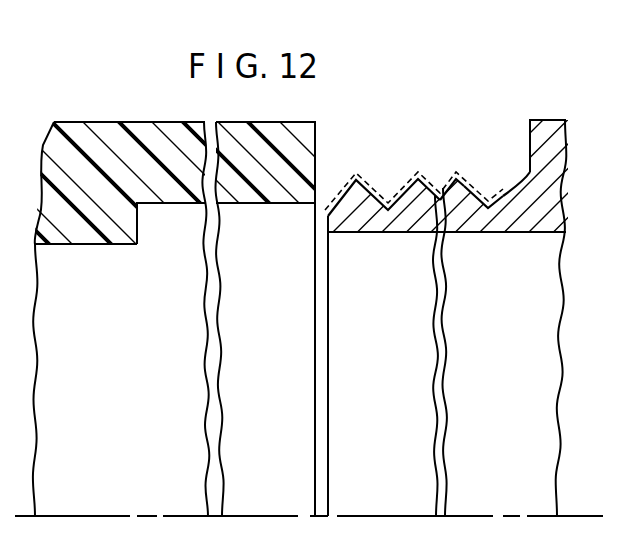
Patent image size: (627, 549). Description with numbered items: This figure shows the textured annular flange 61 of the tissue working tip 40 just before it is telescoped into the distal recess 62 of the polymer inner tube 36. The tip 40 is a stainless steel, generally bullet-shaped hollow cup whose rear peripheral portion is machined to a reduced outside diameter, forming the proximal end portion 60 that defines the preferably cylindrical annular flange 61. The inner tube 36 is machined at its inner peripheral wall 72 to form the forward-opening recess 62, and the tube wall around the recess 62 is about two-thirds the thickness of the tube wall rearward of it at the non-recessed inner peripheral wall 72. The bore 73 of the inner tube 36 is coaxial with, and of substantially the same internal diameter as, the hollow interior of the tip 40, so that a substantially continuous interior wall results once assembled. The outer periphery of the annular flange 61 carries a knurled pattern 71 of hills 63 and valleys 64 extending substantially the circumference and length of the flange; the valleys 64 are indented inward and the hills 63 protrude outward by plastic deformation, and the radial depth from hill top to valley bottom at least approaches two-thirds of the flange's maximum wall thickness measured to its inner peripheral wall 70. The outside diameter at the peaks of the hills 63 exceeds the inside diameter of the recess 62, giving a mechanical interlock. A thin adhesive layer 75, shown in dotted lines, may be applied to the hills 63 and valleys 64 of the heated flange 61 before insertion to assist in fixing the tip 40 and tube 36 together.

The inner tube 36 is at (113, 112).
The tissue working tip 40 is at (554, 110).
The proximal end portion 60 is at (409, 154).
The annular flange 61 is at (436, 196).
The recess 62 is at (251, 205).
The hills 63 is at (496, 144).
The valleys 64 is at (502, 193).
The inner peripheral wall 70 is at (492, 233).
The knurled pattern 71 is at (452, 170).
The inner peripheral wall 72 is at (70, 245).
The bore 73 is at (129, 372).
The adhesive layer 75 is at (366, 176).